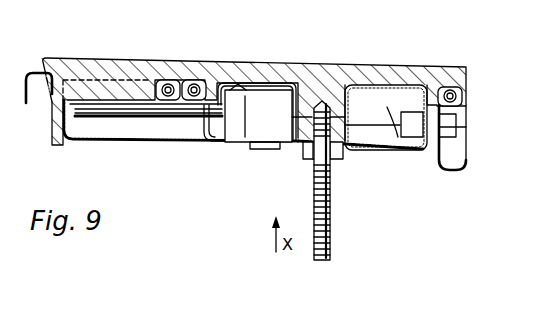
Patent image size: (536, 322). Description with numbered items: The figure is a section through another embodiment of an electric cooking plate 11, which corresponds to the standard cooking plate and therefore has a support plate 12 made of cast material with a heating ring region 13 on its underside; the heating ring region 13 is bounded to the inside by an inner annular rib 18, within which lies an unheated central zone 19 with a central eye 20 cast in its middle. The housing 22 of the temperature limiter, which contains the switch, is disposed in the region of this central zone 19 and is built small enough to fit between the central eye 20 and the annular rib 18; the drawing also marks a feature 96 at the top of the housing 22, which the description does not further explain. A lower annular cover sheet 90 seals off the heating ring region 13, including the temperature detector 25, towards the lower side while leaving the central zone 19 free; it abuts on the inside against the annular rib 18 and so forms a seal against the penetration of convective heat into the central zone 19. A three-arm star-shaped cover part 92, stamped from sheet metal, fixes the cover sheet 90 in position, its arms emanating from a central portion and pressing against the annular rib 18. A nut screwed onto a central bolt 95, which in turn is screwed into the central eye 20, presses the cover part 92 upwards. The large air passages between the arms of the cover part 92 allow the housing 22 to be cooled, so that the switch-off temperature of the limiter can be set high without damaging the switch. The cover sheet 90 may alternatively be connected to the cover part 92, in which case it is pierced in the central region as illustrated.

The electric cooking plate 11 is at (80, 45).
The support plate 12 is at (110, 63).
The heating ring region 13 is at (123, 125).
The inner annular rib 18 is at (212, 122).
The unheated central zone 19 is at (410, 151).
The central eye 20 is at (341, 138).
The housing 22 is at (267, 127).
The temperature detector 25 is at (161, 122).
The cover sheet 90 is at (106, 146).
The cover part 92 is at (388, 152).
The central bolt 95 is at (332, 230).
The mounting point 96 is at (238, 84).